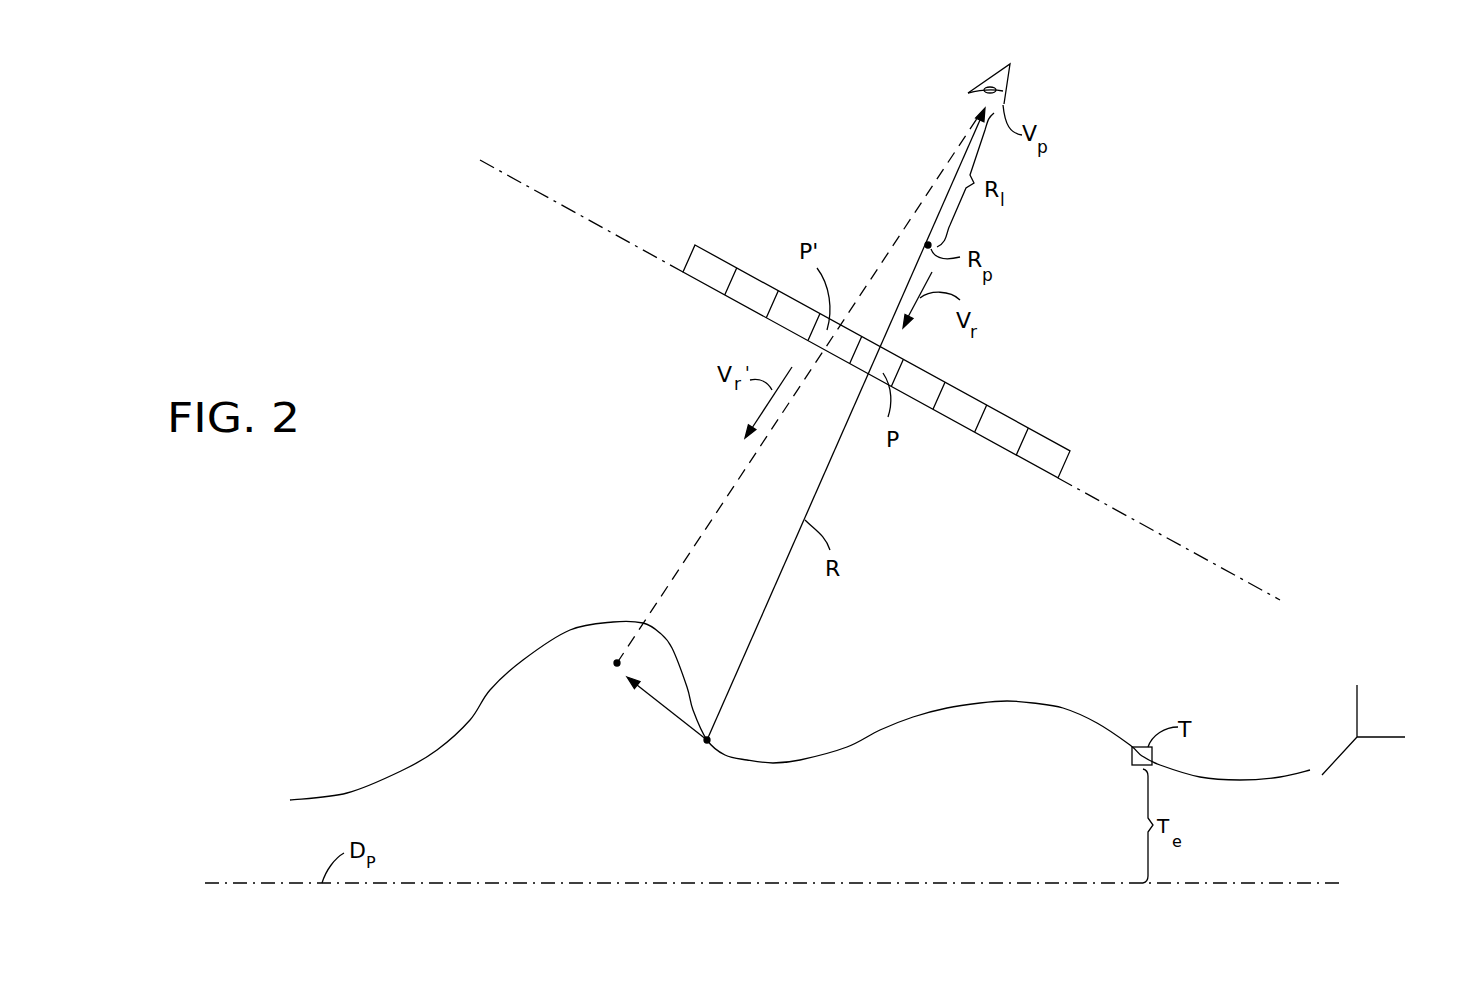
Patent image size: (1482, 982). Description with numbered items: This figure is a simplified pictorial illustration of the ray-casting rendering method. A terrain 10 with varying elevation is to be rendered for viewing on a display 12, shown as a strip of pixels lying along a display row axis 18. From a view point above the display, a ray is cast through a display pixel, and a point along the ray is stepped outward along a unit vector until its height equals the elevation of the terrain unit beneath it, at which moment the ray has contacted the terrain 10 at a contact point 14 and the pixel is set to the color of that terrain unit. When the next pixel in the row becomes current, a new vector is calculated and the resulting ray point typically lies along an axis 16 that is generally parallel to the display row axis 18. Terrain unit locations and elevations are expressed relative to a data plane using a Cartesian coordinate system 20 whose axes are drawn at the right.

The terrain 10 is at (352, 707).
The display 12 is at (747, 225).
The contact point 14 is at (707, 743).
The axis 16 is at (660, 707).
The display row axis 18 is at (591, 219).
The Cartesian coordinate system 20 is at (1401, 687).